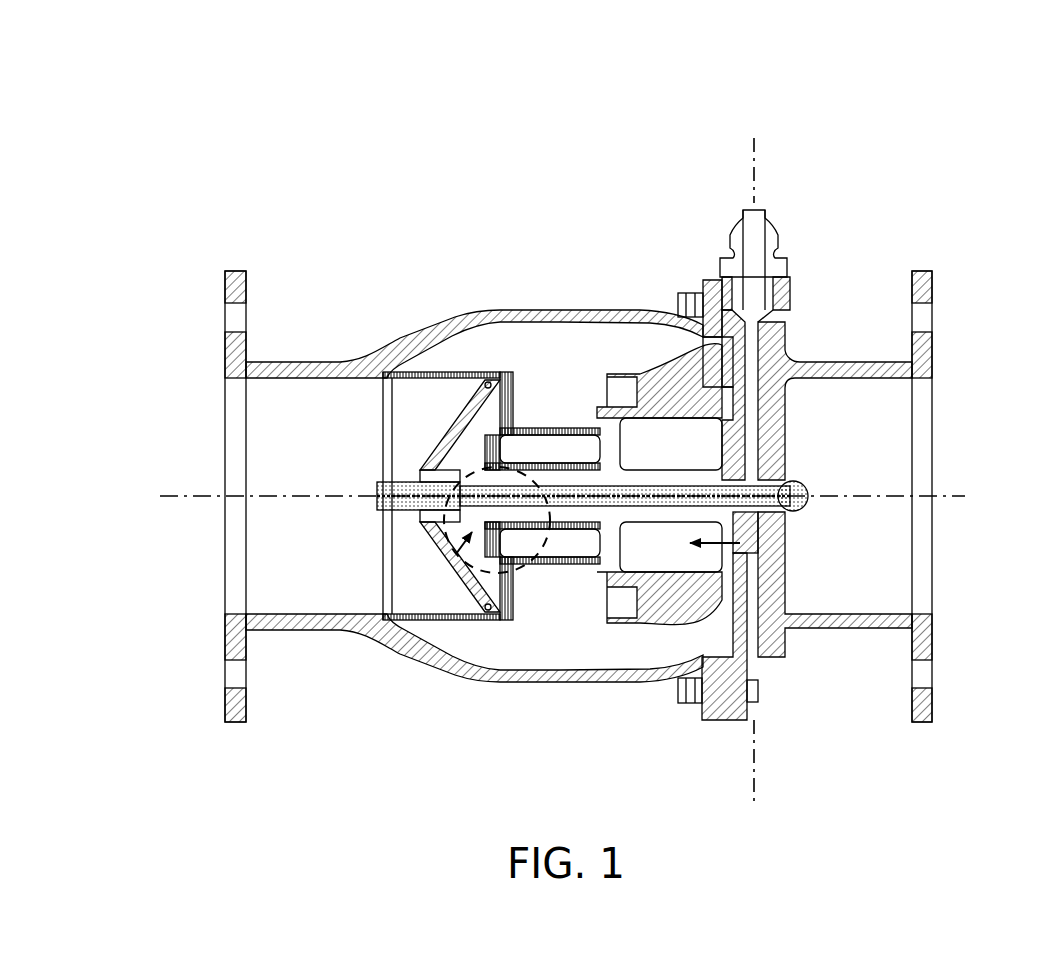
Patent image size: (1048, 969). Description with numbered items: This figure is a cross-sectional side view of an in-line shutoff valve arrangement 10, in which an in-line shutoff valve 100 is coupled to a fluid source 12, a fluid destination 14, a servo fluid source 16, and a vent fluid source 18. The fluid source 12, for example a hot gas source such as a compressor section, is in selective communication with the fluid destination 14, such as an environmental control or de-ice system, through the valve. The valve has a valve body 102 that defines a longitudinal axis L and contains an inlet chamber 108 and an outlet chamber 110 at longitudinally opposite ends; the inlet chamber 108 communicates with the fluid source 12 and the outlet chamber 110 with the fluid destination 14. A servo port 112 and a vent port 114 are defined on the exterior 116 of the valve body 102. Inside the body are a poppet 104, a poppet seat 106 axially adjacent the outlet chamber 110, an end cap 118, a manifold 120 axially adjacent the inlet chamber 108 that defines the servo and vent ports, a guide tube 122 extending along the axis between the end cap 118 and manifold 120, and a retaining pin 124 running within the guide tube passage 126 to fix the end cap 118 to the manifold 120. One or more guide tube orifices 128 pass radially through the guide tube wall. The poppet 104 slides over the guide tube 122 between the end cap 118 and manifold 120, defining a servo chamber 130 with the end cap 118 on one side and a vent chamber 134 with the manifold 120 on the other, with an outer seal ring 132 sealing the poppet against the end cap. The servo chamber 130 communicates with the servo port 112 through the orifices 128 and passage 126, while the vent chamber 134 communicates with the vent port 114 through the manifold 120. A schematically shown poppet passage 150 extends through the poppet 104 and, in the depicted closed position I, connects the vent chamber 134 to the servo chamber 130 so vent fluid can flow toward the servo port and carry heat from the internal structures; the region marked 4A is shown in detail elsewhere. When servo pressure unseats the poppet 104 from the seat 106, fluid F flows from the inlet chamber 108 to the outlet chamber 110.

The in-line shutoff valve arrangement 10 is at (298, 794).
The fluid source 12 is at (1027, 513).
The fluid destination 14 is at (137, 513).
The servo fluid source 16 is at (767, 90).
The vent fluid source 18 is at (767, 873).
The in-line shutoff valve 100 is at (650, 276).
The valve body 102 is at (278, 630).
The poppet 104 is at (430, 632).
The poppet seat 106 is at (385, 380).
The inlet chamber 108 is at (869, 540).
The outlet chamber 110 is at (291, 546).
The servo port 112 is at (765, 212).
The vent port 114 is at (762, 668).
The exterior 116 is at (548, 685).
The end cap 118 is at (457, 472).
The manifold 120 is at (772, 432).
The guide tube 122 is at (685, 470).
The retaining pin 124 is at (782, 514).
The guide tube passage 126 is at (606, 488).
The guide tube orifice 128 is at (428, 562).
The servo chamber 130 is at (422, 359).
The outer seal ring 132 is at (487, 385).
The vent chamber 134 is at (670, 562).
The poppet passage 150 is at (470, 577).
The detail region 4A is at (425, 540).
The longitudinal axis L is at (183, 498).
The fluid flow F is at (703, 579).
The closed position I is at (465, 430).